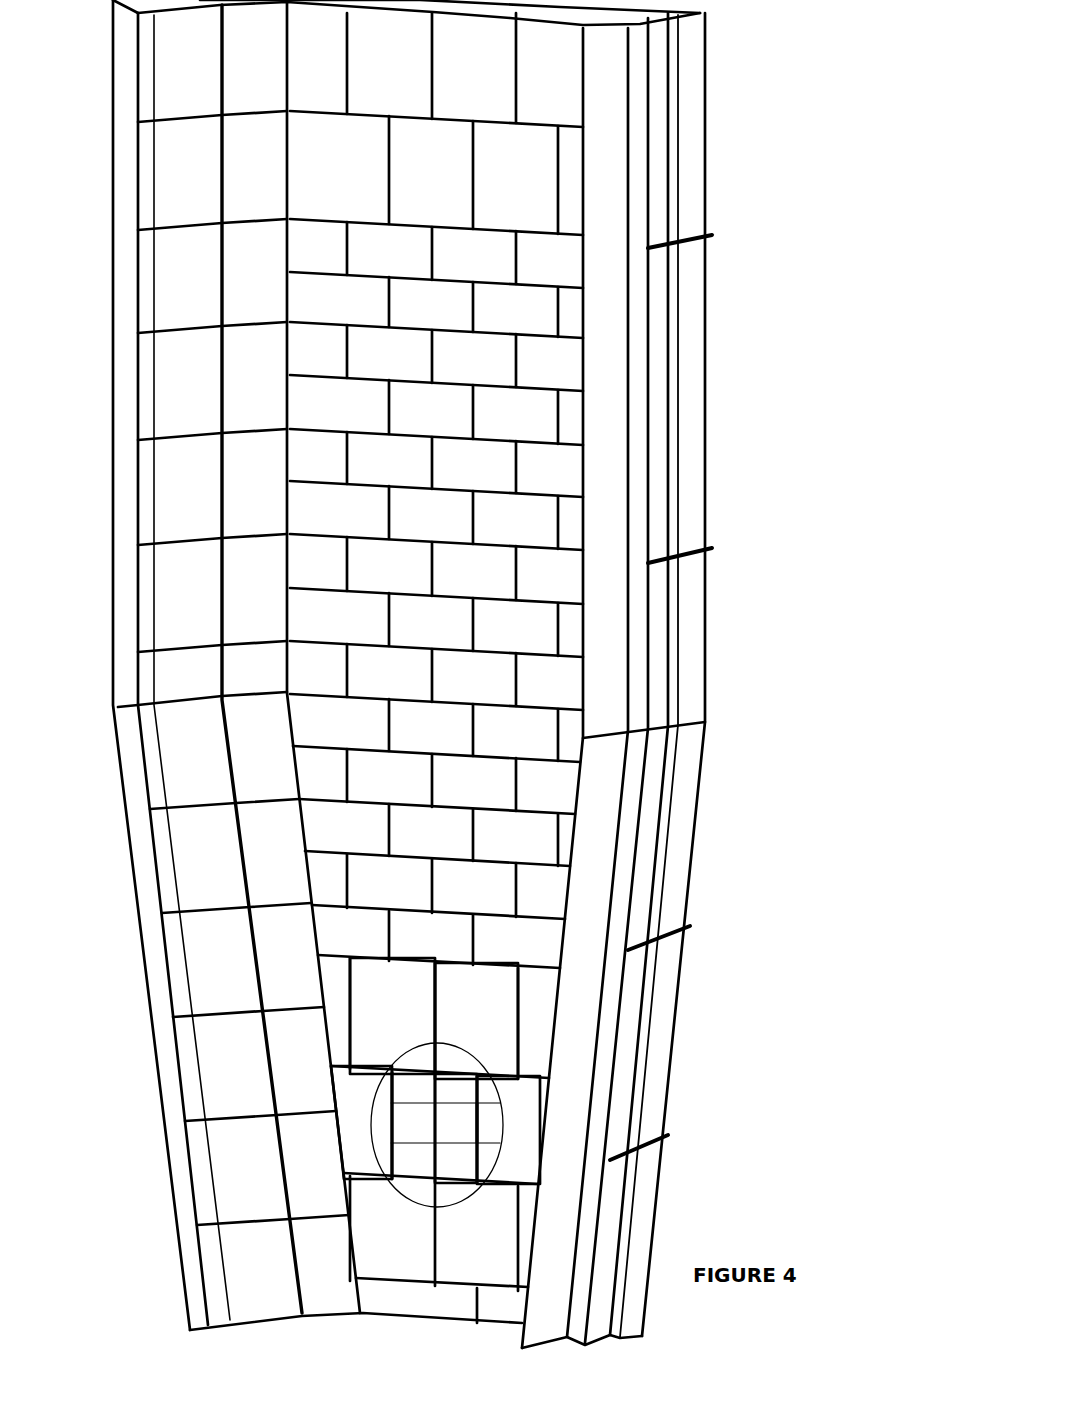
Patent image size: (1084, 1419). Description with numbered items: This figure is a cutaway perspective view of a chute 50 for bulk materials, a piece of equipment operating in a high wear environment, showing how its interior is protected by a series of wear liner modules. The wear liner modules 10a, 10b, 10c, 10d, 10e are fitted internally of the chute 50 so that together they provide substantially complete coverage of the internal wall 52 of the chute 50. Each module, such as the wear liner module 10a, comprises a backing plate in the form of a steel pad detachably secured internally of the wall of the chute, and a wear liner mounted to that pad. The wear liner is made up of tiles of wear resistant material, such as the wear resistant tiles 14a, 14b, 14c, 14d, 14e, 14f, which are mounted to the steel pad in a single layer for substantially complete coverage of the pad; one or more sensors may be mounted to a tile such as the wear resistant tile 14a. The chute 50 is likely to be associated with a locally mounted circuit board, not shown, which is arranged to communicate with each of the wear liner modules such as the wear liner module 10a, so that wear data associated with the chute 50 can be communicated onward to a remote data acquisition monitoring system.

The wear liner module 10a is at (482, 1067).
The wear liner module 10b is at (613, 1128).
The wear liner module 10c is at (352, 1128).
The wear liner module 10d is at (367, 1005).
The wear liner module 10e is at (497, 1003).
The wear resistant tile 14a is at (527, 1132).
The wear resistant tile 14b is at (460, 1168).
The wear resistant tile 14c is at (405, 1160).
The wear resistant tile 14d is at (405, 1112).
The wear resistant tile 14e is at (408, 1087).
The wear resistant tile 14f is at (470, 1120).
The chute 50 is at (713, 462).
The internal wall 52 is at (650, 866).